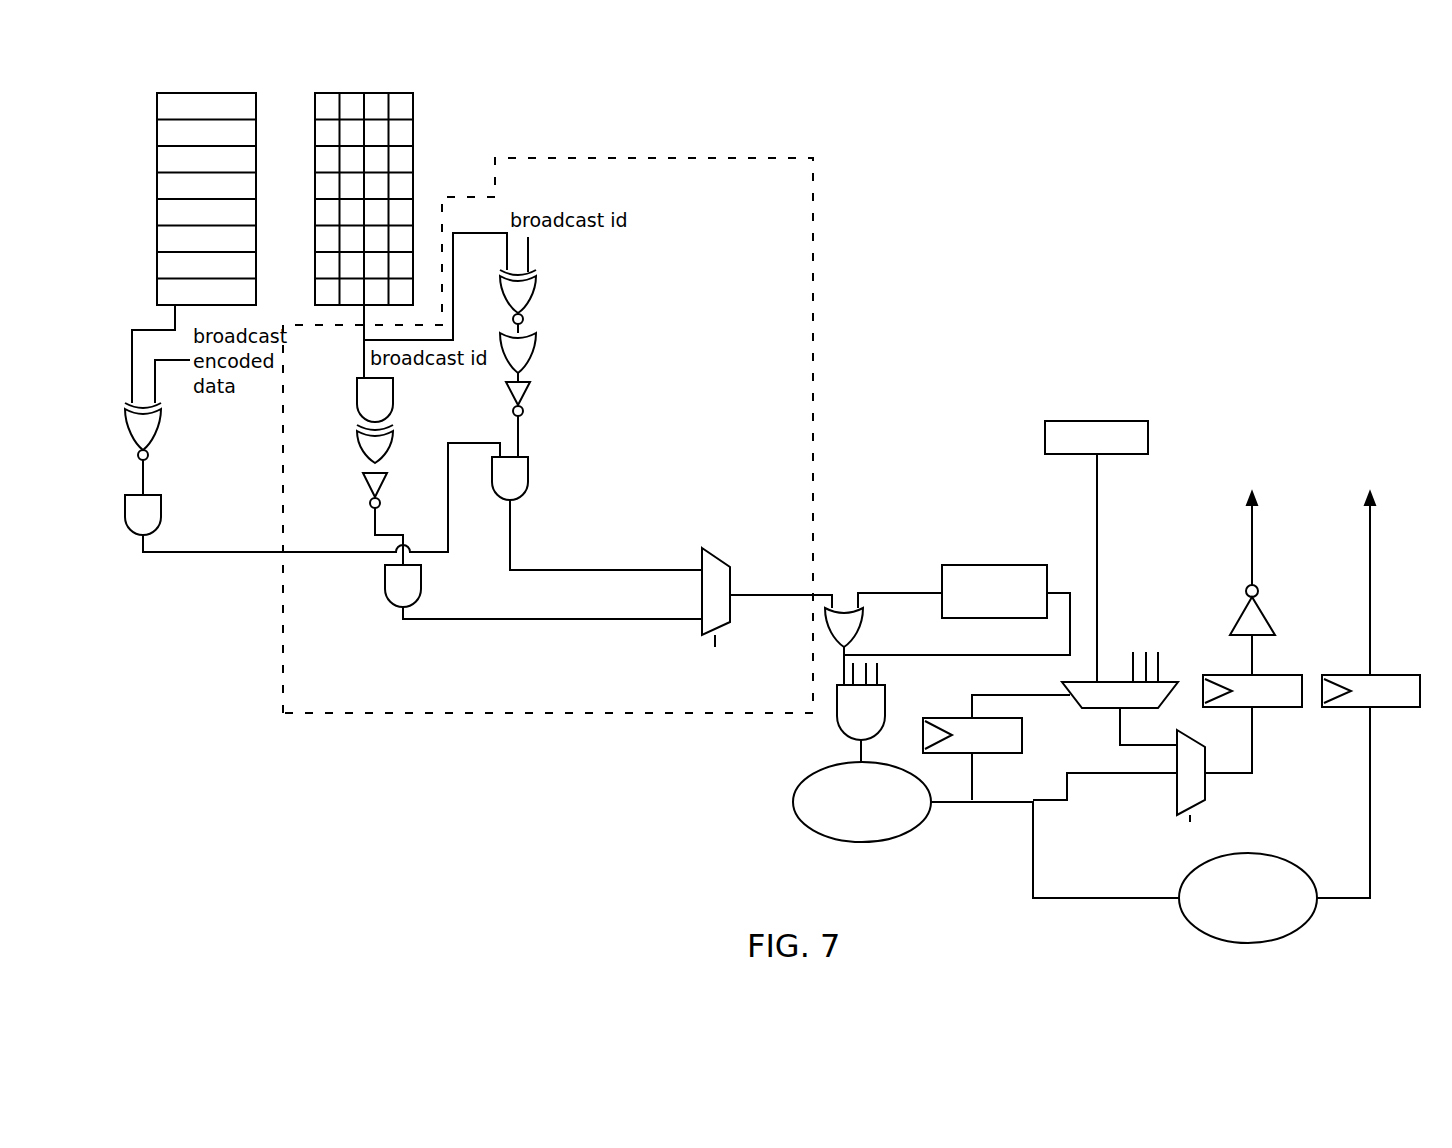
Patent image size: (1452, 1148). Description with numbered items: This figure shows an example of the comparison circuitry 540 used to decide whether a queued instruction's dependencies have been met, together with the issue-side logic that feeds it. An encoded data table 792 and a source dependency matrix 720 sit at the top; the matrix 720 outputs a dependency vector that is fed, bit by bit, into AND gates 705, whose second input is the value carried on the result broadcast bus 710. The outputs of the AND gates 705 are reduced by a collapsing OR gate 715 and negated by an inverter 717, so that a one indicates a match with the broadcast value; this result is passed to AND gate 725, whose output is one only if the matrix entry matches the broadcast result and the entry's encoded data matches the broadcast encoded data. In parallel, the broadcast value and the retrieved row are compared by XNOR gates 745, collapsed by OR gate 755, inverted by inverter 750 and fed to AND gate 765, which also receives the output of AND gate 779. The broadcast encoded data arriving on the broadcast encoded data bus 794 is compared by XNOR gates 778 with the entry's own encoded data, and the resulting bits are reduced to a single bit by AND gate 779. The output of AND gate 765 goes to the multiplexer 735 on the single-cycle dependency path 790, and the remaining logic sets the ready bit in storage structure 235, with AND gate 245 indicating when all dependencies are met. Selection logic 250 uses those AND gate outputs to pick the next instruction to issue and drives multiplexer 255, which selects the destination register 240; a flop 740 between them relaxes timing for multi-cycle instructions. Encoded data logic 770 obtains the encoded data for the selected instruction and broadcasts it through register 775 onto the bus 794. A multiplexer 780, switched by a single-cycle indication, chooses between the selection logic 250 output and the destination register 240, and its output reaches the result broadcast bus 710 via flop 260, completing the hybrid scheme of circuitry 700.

The encoded data table 792 is at (256, 158).
The source dependency matrix 720 is at (413, 183).
The comparison circuitry 540 is at (483, 714).
The signal 790 is at (697, 714).
The XNOR gates 778 is at (162, 421).
The AND gate 779 is at (162, 511).
The AND gates 705 is at (357, 398).
The collapsing OR gate 715 is at (357, 440).
The inverter 717 is at (363, 487).
The AND gate 725 is at (385, 580).
The XNOR gates 745 is at (537, 286).
The collapsing OR gate 755 is at (535, 352).
The inverter 750 is at (525, 395).
The AND gate 765 is at (528, 478).
The multiplexer 735 is at (733, 535).
The storage structure 235 is at (997, 565).
The AND gate 245 is at (837, 718).
The selection logic 250 is at (793, 805).
The flop 740 is at (953, 717).
The multiplexer 255 is at (1100, 708).
The destination register 240 is at (1132, 455).
The processing circuitry 700 is at (966, 417).
The multiplexer 780 is at (1175, 778).
The flop 260 is at (1278, 711).
The result broadcast bus 710 is at (1253, 545).
The register 775 is at (1397, 712).
The broadcast encoded data bus 794 is at (1371, 590).
The encoded data logic 770 is at (1313, 918).